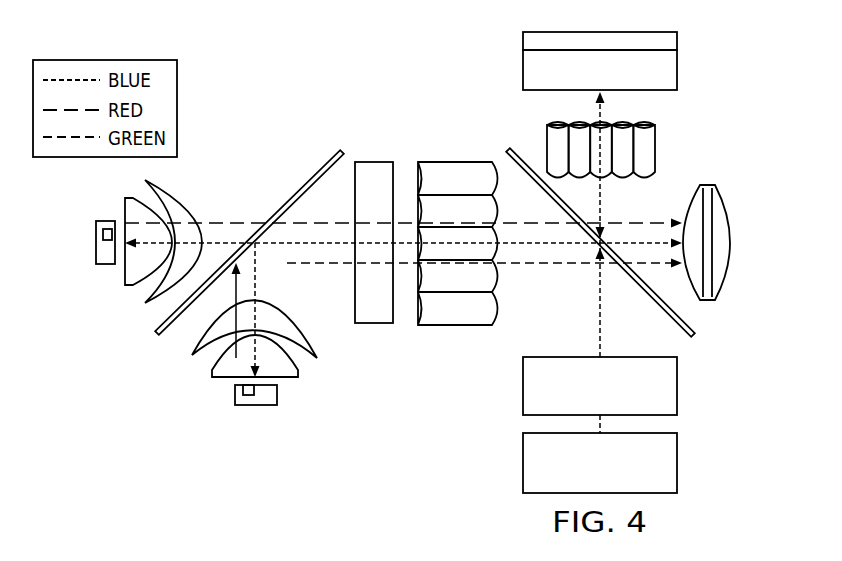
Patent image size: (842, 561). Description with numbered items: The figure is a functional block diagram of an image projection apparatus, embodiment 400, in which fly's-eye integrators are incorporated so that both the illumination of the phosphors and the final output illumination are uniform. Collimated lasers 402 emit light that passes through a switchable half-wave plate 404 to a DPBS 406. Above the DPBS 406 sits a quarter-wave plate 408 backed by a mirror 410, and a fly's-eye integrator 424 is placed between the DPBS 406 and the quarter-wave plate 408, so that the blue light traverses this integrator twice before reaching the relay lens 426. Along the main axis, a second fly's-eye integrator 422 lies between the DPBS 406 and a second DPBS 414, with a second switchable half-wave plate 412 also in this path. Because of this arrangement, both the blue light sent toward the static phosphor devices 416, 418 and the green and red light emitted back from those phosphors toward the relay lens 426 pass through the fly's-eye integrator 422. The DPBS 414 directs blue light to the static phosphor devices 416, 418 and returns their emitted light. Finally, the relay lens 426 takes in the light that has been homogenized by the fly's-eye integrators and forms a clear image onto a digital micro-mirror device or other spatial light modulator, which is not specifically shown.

The embodiment 400 is at (249, 91).
The collimated lasers 402 is at (677, 463).
The switchable half-wave plate 404 is at (677, 387).
The DPBS 406 is at (685, 315).
The quarter-wave plate 408 is at (672, 68).
The mirror 410 is at (672, 40).
The switchable half-wave plate 412 is at (373, 162).
The DPBS 414 is at (305, 180).
The static phosphor device 416 is at (96, 240).
The static phosphor device 418 is at (235, 393).
The fly's-eye integrator 422 is at (458, 162).
The fly's-eye integrator 424 is at (657, 147).
The relay lens 426 is at (733, 230).